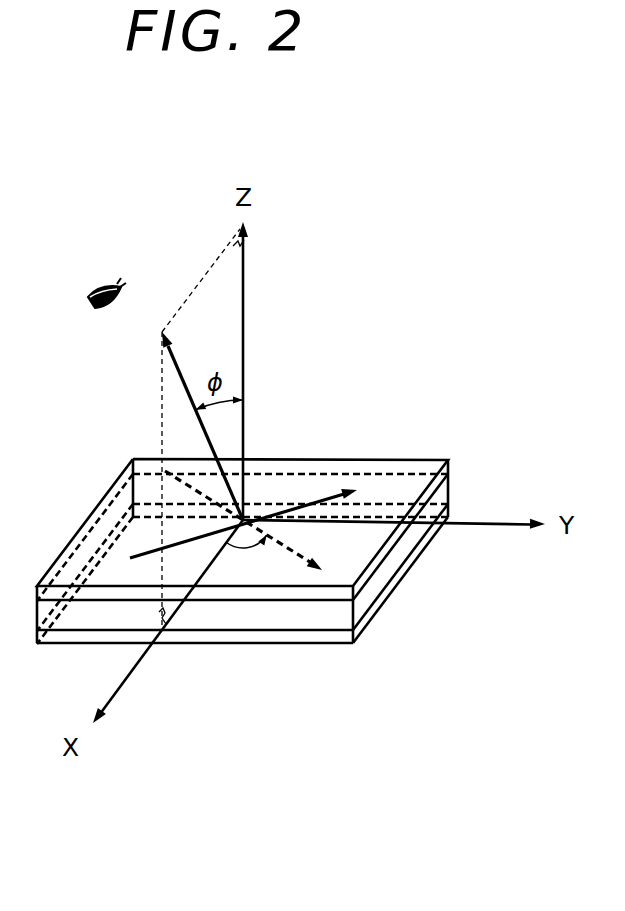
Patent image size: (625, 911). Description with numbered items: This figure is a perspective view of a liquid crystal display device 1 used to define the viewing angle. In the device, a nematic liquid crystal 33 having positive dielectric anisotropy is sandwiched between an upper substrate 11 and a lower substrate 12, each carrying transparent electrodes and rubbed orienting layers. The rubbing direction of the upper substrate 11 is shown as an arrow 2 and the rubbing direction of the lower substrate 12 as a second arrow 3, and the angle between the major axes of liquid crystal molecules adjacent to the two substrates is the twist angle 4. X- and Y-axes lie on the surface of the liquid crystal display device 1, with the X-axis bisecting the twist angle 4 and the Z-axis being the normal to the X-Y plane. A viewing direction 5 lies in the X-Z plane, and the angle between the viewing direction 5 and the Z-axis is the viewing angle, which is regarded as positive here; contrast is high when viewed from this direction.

The liquid crystal display device 1 is at (332, 460).
The upper substrate 11 is at (393, 460).
The lower substrate 12 is at (450, 512).
The nematic liquid crystal 33 is at (442, 492).
The rubbing direction of upper substrate 2 is at (314, 494).
The rubbing direction of lower substrate 3 is at (302, 549).
The twist angle 4 is at (233, 550).
The viewing direction 5 is at (180, 380).